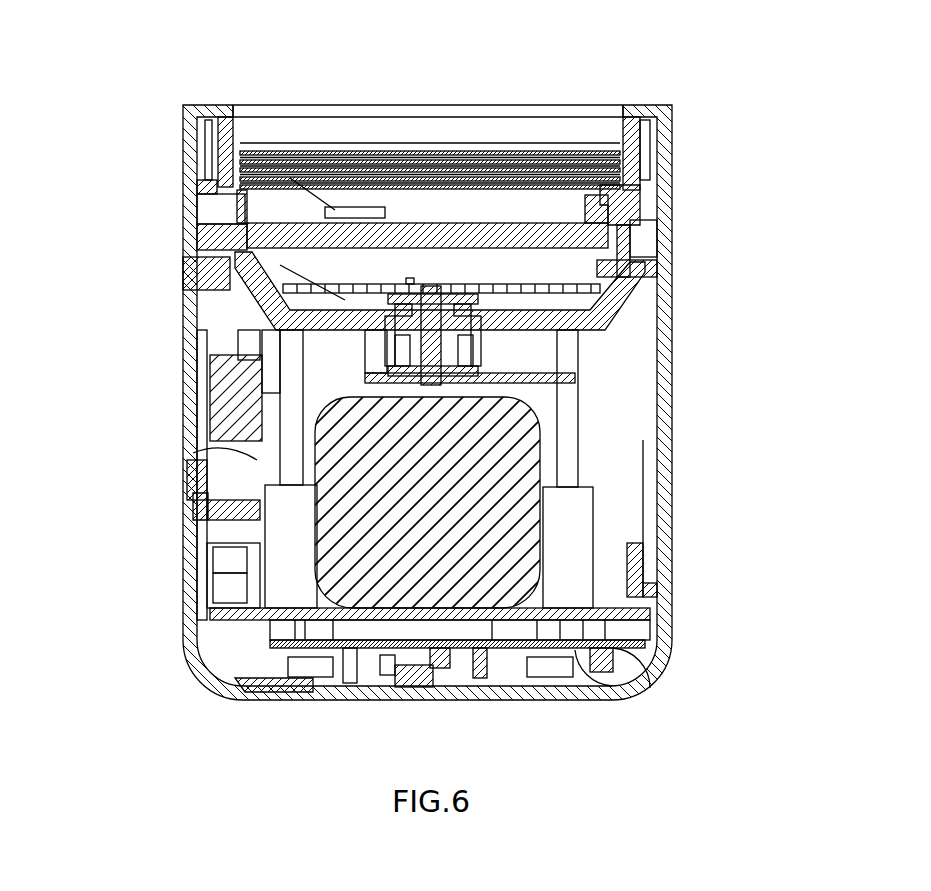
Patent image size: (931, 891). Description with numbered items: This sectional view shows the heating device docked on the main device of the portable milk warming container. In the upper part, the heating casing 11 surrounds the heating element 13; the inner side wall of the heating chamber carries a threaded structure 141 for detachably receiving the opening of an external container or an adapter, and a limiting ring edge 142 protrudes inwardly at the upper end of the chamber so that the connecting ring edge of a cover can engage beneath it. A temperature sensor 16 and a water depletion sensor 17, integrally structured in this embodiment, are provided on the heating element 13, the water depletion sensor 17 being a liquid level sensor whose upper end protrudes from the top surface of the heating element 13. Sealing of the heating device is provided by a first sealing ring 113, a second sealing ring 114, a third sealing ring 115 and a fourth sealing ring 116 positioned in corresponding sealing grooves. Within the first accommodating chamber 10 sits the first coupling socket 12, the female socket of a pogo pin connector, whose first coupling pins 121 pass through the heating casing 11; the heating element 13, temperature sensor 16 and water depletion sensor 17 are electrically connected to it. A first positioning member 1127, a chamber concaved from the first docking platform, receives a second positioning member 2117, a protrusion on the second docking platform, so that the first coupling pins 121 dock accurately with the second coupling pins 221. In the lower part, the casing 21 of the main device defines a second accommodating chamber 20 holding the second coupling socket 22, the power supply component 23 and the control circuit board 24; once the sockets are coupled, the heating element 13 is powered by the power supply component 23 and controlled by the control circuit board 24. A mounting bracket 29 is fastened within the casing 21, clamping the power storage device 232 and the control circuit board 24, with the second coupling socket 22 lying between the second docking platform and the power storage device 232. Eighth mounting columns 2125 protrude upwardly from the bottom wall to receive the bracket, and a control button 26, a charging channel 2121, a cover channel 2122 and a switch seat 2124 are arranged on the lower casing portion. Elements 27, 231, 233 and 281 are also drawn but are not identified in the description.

The first accommodating chamber 10 is at (672, 285).
The heating casing 11 is at (672, 135).
The first sealing ring 113 is at (672, 215).
The second sealing ring 114 is at (672, 186).
The third sealing ring 115 is at (228, 105).
The fourth sealing ring 116 is at (672, 250).
The first coupling socket 12 is at (200, 268).
The first coupling pin 121 is at (390, 300).
The heating element 13 is at (672, 233).
The threaded structure 141 is at (502, 147).
The limiting ring edge 142 is at (375, 105).
The temperature sensor 16 is at (197, 224).
The water depletion sensor 17 is at (200, 183).
The second accommodating chamber 20 is at (605, 420).
The casing of the main device 21 is at (672, 500).
The second positioning member 2117 is at (672, 342).
The charging channel 2121 is at (672, 636).
The cover channel 2122 is at (672, 580).
The switch seat 2124 is at (320, 700).
The eighth mounting column 2125 is at (275, 655).
The second coupling socket 22 is at (560, 368).
The second coupling pin 221 is at (390, 345).
The power supply component 23 is at (545, 560).
The base plate curved portion 231 is at (625, 688).
The power storage device 232 is at (547, 457).
The base plate end portion 233 is at (650, 668).
The control circuit board 24 is at (250, 450).
The control button 26 is at (210, 522).
The side fixing member 27 is at (672, 610).
The bottom connector 281 is at (422, 700).
The mounting bracket 29 is at (200, 582).
The first positioning member 1127 is at (672, 320).